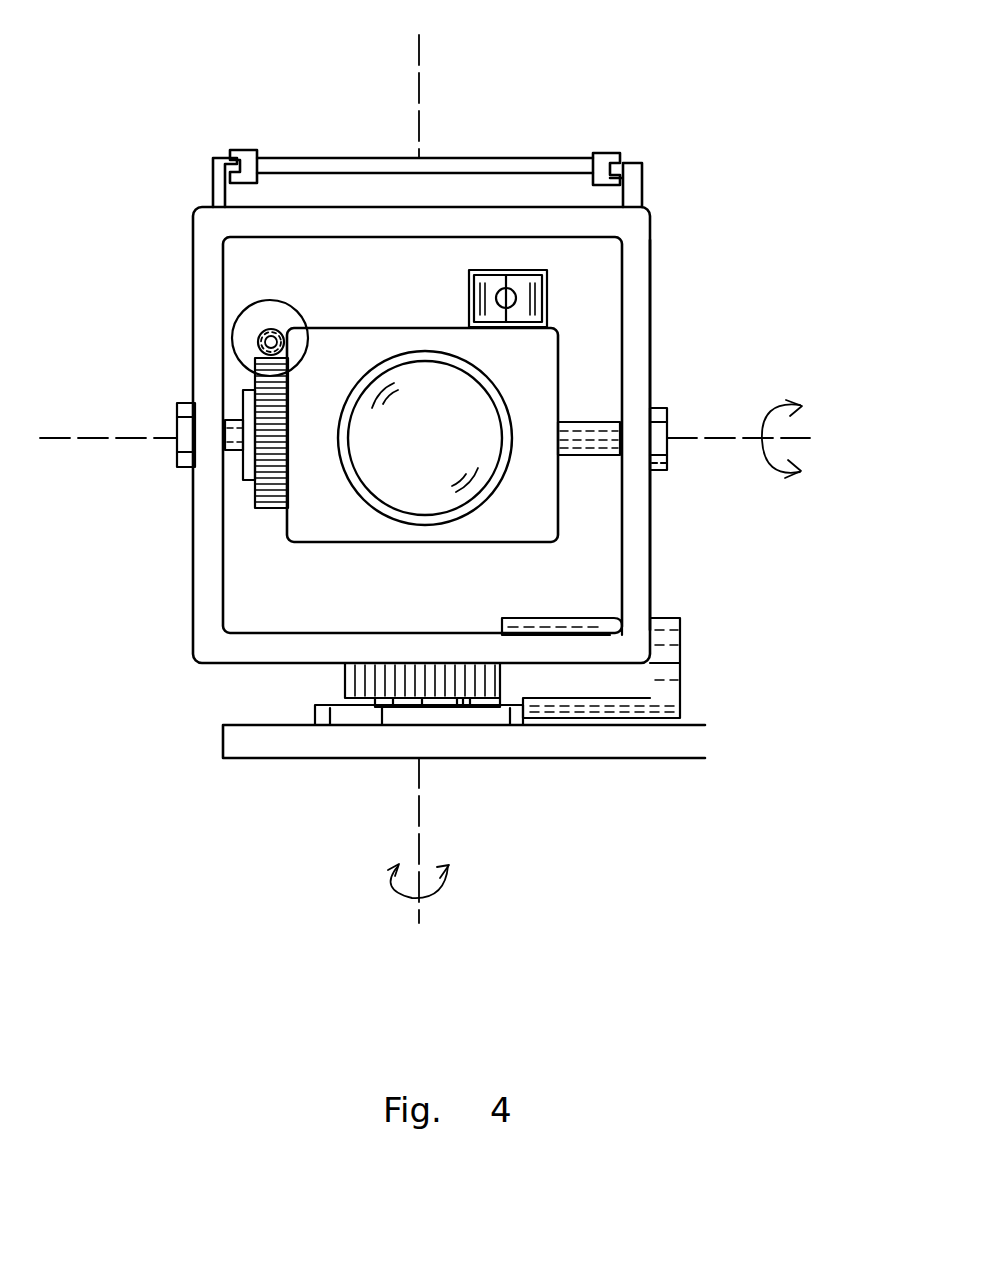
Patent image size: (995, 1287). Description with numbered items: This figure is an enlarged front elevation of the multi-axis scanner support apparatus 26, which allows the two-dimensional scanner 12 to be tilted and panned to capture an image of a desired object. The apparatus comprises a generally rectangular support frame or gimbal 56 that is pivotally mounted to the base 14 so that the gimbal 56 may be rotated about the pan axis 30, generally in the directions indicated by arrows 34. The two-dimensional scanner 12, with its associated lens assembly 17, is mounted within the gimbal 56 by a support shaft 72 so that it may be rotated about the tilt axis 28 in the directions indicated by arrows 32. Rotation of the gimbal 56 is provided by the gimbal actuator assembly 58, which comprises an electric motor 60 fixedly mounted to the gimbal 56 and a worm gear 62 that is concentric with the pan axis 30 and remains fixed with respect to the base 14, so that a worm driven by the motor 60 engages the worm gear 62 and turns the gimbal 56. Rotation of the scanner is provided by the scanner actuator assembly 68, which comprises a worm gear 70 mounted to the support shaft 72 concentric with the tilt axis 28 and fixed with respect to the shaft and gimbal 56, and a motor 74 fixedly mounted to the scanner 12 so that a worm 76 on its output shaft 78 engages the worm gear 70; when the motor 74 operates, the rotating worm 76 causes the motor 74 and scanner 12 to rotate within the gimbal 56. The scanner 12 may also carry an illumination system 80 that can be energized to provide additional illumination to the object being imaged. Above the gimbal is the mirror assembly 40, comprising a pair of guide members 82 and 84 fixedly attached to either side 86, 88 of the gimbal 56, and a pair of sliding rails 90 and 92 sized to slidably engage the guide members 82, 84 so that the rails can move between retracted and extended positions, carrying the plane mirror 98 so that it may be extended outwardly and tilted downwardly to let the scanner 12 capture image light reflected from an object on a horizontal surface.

The two-dimensional scanner 12 is at (522, 556).
The base 14 is at (223, 742).
The lens assembly 17 is at (505, 385).
The multi-axis scanner support apparatus 26 is at (145, 40).
The tilt axis 28 is at (810, 438).
The pan axis 30 is at (419, 905).
The arrows 32 is at (783, 480).
The arrows 34 is at (458, 875).
The mirror assembly 40 is at (553, 144).
The support frame or gimbal 56 is at (662, 305).
The gimbal actuator assembly 58 is at (696, 679).
The electric motor 60 is at (516, 618).
The worm gear 62 is at (345, 682).
The scanner actuator assembly 68 is at (228, 308).
The worm gear 70 is at (268, 508).
The support shaft 72 is at (590, 422).
The motor 74 is at (300, 335).
The worm 76 is at (276, 330).
The output shaft 78 is at (282, 345).
The illumination system 80 is at (470, 300).
The guide member 82 is at (213, 188).
The guide member 84 is at (642, 168).
The side of the gimbal assembly 86 is at (195, 270).
The side of the gimbal assembly 88 is at (655, 232).
The sliding rail 90 is at (243, 150).
The sliding rail 92 is at (600, 153).
The plane mirror 98 is at (402, 158).